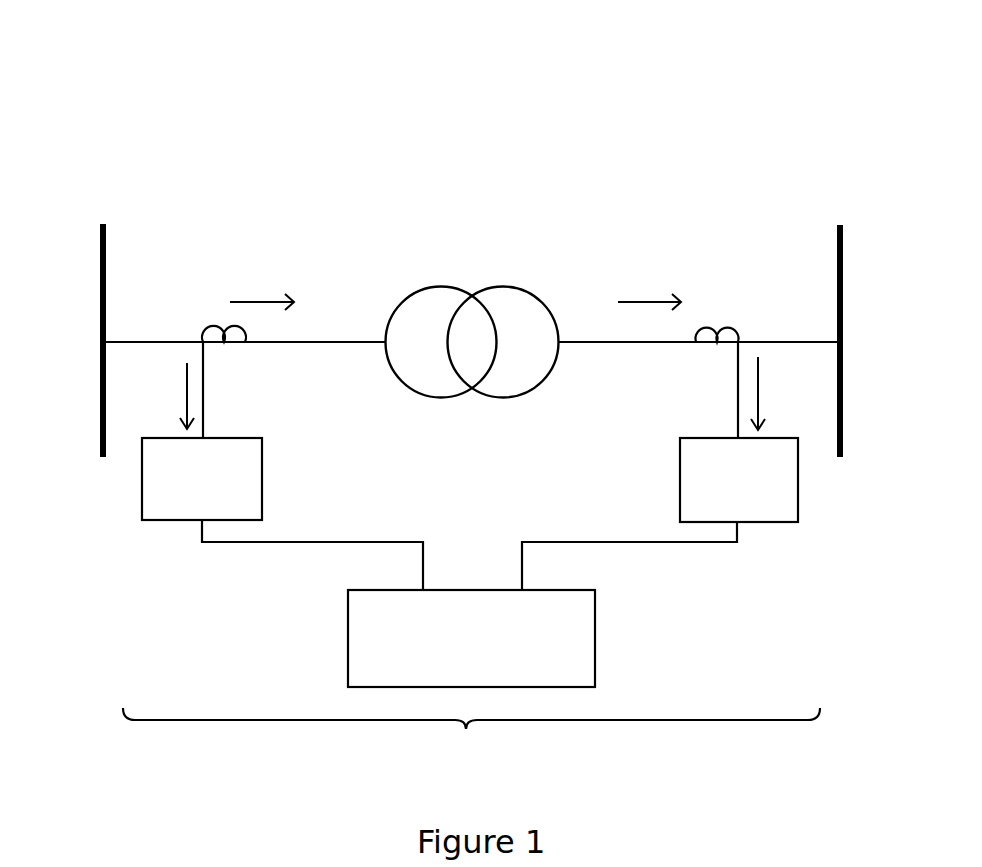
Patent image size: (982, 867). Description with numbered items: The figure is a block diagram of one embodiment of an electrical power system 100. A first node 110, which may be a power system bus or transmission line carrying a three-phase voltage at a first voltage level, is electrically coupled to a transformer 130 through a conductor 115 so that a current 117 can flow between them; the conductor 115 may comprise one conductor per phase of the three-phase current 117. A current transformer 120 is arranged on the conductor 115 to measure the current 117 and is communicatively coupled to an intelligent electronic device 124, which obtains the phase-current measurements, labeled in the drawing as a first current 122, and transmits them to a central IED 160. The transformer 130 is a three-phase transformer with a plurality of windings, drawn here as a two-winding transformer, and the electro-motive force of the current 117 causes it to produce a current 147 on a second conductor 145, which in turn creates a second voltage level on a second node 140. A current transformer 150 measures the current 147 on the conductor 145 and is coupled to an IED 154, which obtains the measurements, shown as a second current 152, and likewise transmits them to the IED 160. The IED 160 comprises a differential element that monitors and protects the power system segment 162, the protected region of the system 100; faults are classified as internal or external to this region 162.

The electrical power system 100 is at (100, 74).
The first node 110 is at (106, 236).
The conductor 115 is at (150, 339).
The current 117 is at (262, 293).
The current transformer 120 is at (245, 344).
The first current I1 122 is at (162, 396).
The intelligent electronic device 124 is at (228, 511).
The transformer 130 is at (436, 287).
The second node 140 is at (843, 236).
The conductor 145 is at (784, 339).
The current 147 is at (649, 293).
The current transformer 150 is at (696, 344).
The second current I2 152 is at (784, 393).
The IED 154 is at (712, 512).
The IED 160 is at (444, 672).
The power system segment 162 is at (471, 735).